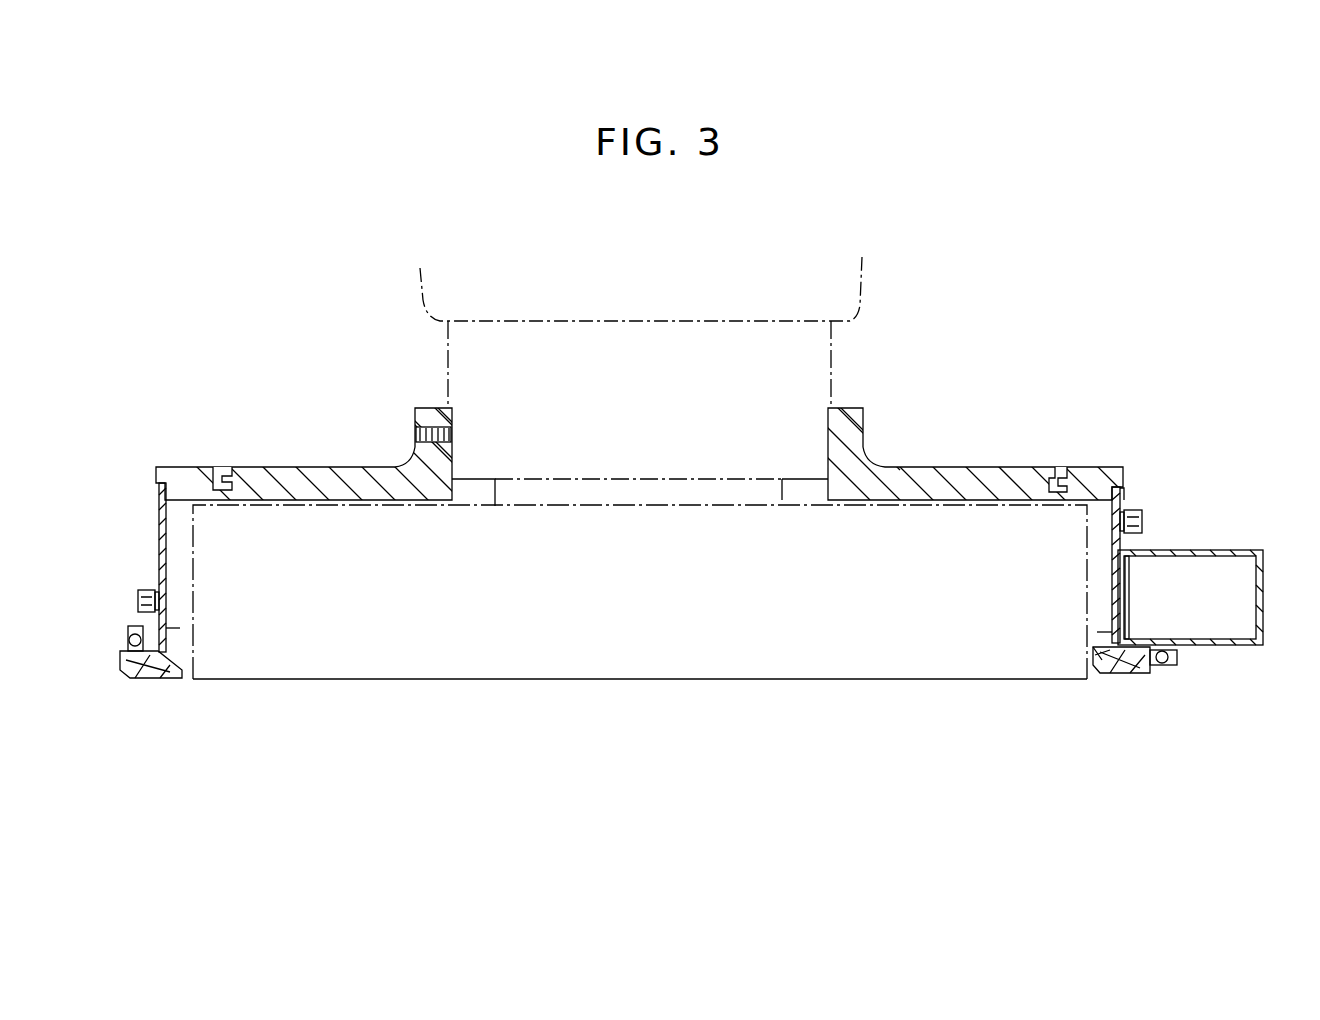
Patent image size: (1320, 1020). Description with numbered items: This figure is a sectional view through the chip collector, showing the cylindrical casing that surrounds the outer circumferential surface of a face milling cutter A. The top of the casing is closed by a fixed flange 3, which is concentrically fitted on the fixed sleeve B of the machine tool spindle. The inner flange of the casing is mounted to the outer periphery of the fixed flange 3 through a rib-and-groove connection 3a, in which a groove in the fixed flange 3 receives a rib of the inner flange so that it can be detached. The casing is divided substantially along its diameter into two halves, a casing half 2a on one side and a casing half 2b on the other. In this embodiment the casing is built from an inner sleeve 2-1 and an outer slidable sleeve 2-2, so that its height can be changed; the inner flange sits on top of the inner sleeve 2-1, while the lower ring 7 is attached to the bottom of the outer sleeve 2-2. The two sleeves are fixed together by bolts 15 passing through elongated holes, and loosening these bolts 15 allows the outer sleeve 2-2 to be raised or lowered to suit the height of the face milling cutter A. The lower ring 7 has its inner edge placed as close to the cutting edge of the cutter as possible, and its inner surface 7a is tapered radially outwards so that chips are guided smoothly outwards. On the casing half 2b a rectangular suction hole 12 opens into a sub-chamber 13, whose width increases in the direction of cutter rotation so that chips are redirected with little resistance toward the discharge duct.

The face milling cutter A is at (589, 632).
The fixed sleeve B is at (807, 357).
The fixed flange 3 is at (915, 480).
The rib-and-groove connection 3a is at (1058, 466).
The casing half 2a is at (158, 541).
The inner sleeve 2-1 is at (1120, 493).
The outer slidable sleeve 2-2 is at (1122, 497).
The casing half 2b is at (1125, 542).
The bolts 15 is at (138, 600).
The lower ring 7 is at (1122, 675).
The inner surface 7a is at (1100, 657).
The suction hole 12 is at (1117, 600).
The sub-chamber 13 is at (1265, 615).